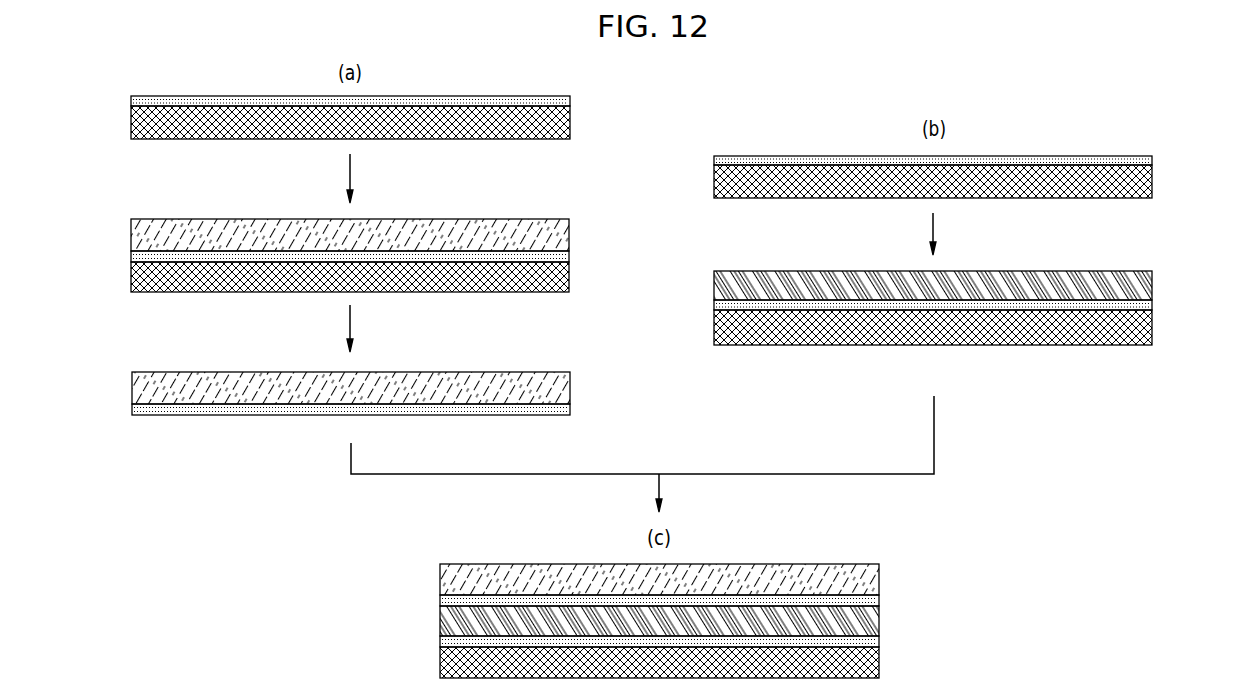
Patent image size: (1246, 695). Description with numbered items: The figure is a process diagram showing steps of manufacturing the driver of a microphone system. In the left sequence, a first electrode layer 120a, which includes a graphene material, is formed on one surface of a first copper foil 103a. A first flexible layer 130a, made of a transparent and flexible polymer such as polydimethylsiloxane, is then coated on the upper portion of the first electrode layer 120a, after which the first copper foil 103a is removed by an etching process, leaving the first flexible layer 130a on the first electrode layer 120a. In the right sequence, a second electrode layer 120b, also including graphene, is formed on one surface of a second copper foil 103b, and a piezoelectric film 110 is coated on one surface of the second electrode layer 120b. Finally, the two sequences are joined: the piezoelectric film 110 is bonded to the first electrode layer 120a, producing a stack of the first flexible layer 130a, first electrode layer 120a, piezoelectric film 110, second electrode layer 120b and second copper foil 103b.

The first electrode layer 120a is at (570, 100).
The first copper foil 103a is at (570, 128).
The first flexible layer 130a is at (554, 236).
The second electrode layer 120b is at (1152, 160).
The second copper foil 103b is at (1146, 180).
The piezoelectric film 110 is at (1136, 286).